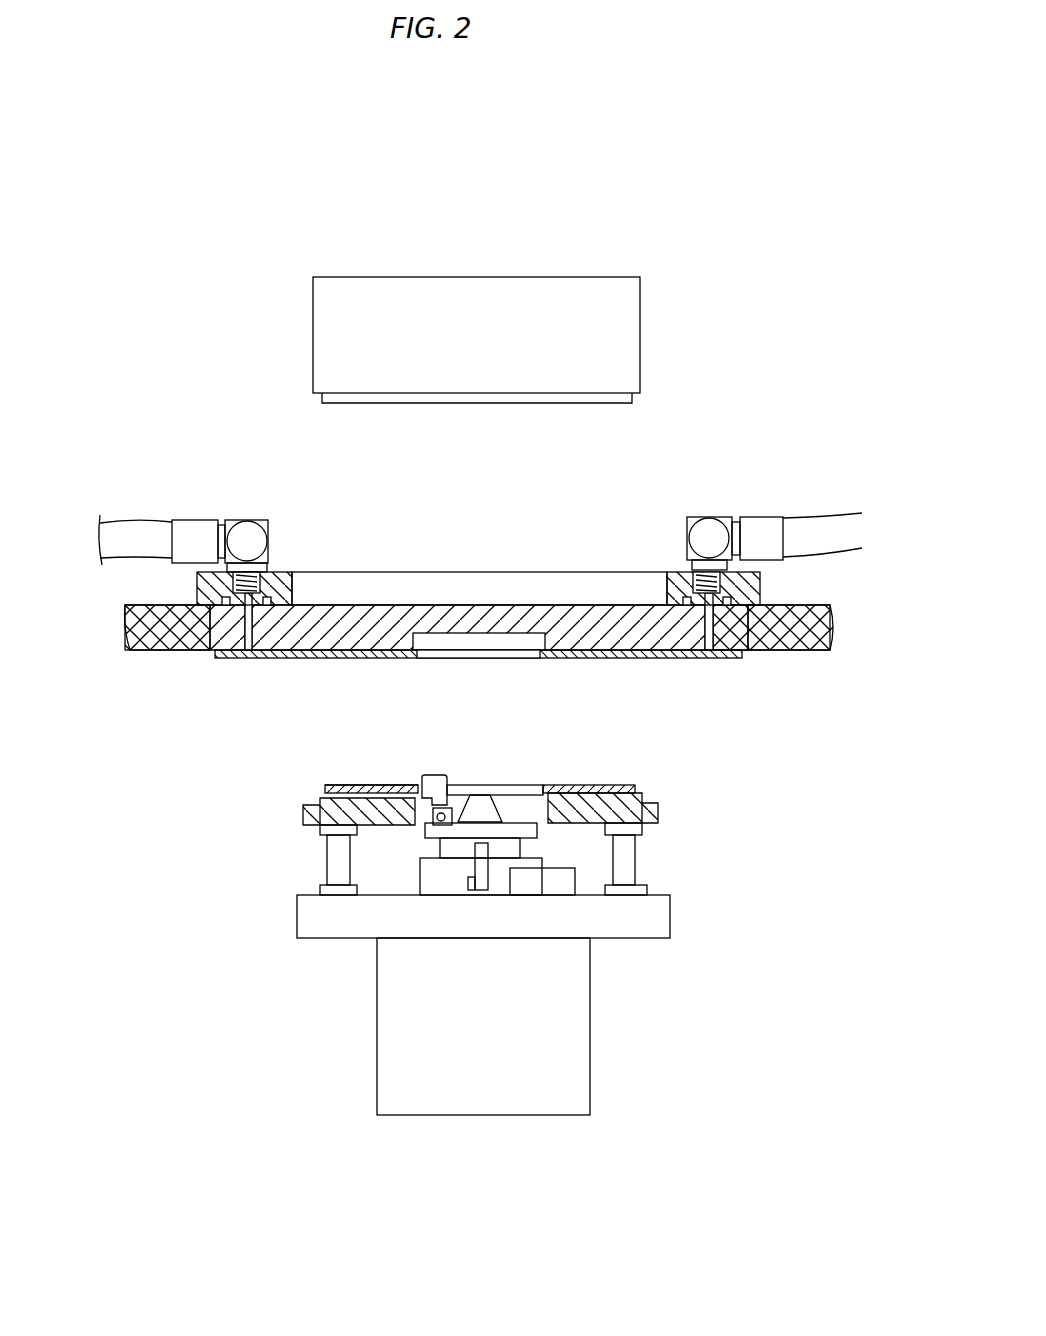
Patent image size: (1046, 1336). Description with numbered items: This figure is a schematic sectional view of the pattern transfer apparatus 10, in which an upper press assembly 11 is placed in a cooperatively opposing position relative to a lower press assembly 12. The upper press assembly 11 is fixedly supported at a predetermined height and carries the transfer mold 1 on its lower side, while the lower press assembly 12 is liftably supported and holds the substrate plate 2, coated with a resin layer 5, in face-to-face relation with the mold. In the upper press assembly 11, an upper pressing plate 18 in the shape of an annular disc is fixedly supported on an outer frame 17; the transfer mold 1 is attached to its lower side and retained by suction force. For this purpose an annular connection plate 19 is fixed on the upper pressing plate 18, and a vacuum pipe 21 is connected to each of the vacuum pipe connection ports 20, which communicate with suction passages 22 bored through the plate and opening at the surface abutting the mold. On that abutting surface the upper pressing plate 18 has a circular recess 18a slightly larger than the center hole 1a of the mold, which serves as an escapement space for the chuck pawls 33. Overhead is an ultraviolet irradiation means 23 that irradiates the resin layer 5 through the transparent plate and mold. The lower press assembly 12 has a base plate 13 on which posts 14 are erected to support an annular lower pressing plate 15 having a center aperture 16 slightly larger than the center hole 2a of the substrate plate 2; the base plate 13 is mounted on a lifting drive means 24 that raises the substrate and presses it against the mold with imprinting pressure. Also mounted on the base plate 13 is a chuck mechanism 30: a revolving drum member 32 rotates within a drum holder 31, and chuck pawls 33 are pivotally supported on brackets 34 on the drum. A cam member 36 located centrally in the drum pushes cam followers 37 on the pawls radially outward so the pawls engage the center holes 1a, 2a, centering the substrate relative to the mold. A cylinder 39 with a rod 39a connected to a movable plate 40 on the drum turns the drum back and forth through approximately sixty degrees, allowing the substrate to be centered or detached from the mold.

The pattern transfer apparatus 10 is at (222, 350).
The ultraviolet irradiation means 23 is at (443, 292).
The transfer mold 1 is at (683, 657).
The center hole 1a is at (420, 659).
The upper pressing plate 18 is at (305, 625).
The circular recess 18a is at (473, 638).
The suction passages 22 is at (247, 633).
The vacuum pipe 21 is at (250, 540).
The vacuum pipe connection ports 20 is at (217, 522).
The outer frame 17 is at (160, 627).
The annular connection plate 19 is at (752, 568).
The upper press assembly 11 is at (232, 674).
The center hole 2a is at (533, 783).
The resin layer 5 is at (607, 785).
The cam member 36 is at (505, 785).
The chuck pawls 33 is at (432, 777).
The cam followers 37 is at (470, 800).
The substrate plate 2 is at (323, 790).
The lower pressing plate 15 is at (312, 810).
The chuck mechanism 30 is at (525, 812).
The brackets 34 is at (342, 785).
The center aperture 16 is at (543, 823).
The revolving drum member 32 is at (453, 848).
The drum holder 31 is at (440, 878).
The movable plate 40 is at (480, 880).
The rod 39a is at (500, 883).
The cylinder 39 is at (570, 890).
The posts 14 is at (335, 870).
The base plate 13 is at (308, 920).
The lifting drive means 24 is at (495, 1093).
The lower press assembly 12 is at (683, 831).